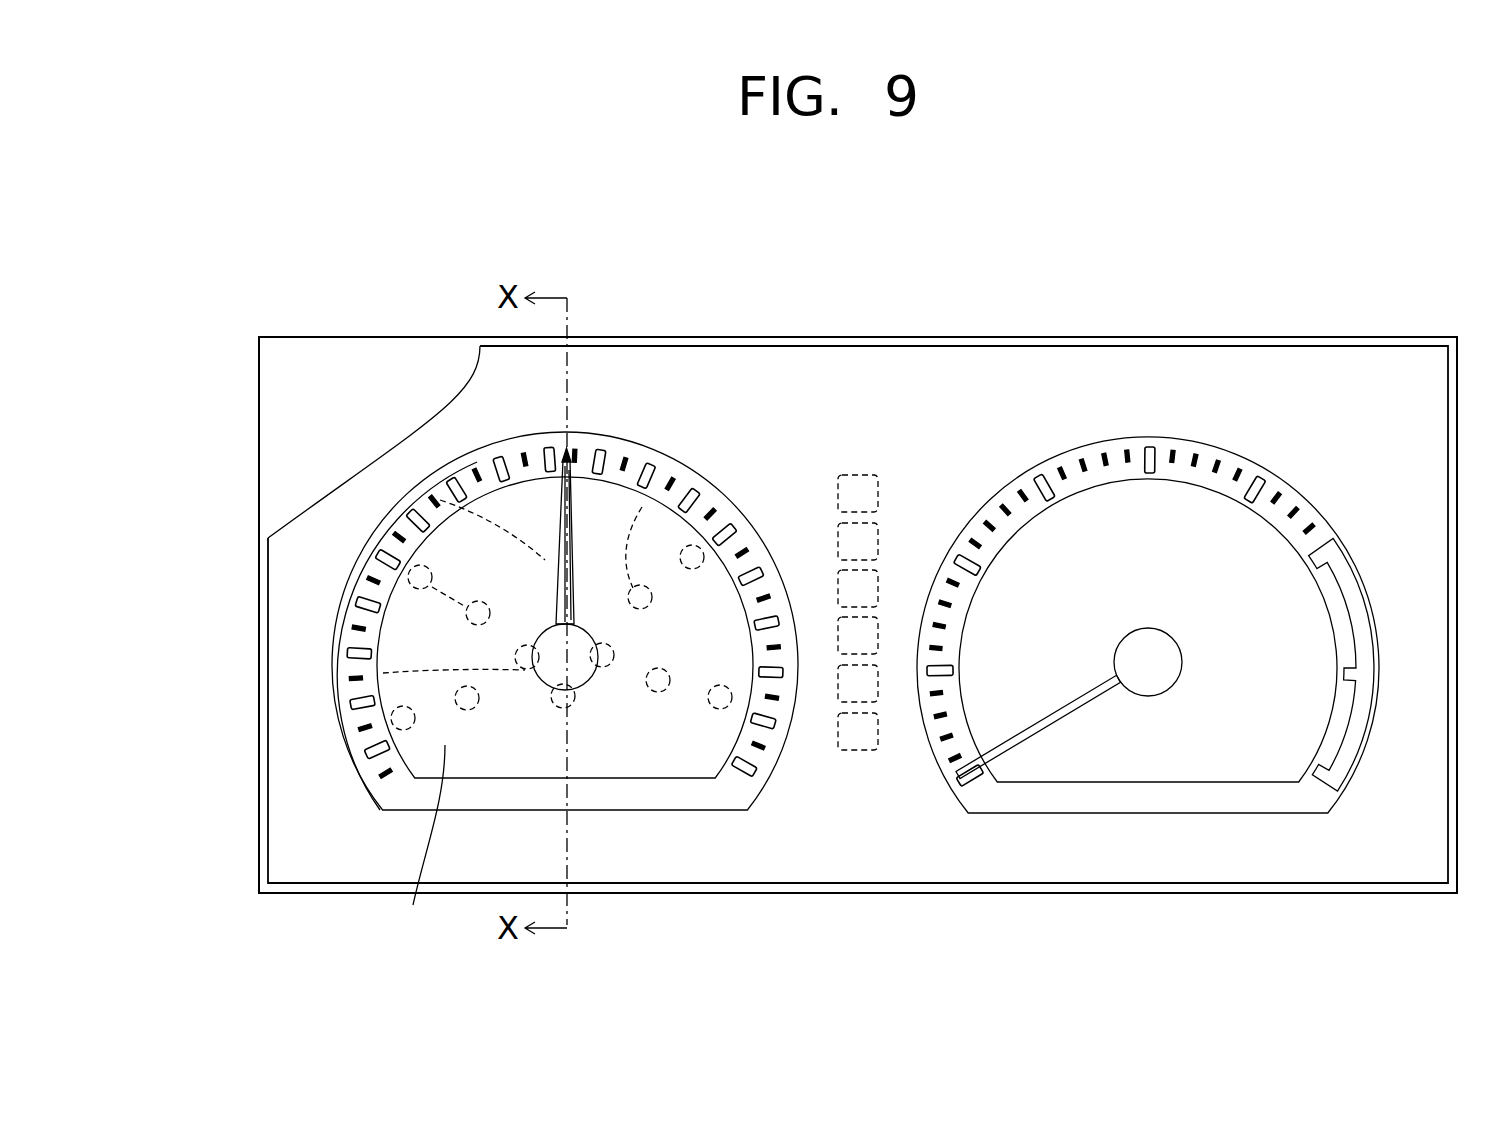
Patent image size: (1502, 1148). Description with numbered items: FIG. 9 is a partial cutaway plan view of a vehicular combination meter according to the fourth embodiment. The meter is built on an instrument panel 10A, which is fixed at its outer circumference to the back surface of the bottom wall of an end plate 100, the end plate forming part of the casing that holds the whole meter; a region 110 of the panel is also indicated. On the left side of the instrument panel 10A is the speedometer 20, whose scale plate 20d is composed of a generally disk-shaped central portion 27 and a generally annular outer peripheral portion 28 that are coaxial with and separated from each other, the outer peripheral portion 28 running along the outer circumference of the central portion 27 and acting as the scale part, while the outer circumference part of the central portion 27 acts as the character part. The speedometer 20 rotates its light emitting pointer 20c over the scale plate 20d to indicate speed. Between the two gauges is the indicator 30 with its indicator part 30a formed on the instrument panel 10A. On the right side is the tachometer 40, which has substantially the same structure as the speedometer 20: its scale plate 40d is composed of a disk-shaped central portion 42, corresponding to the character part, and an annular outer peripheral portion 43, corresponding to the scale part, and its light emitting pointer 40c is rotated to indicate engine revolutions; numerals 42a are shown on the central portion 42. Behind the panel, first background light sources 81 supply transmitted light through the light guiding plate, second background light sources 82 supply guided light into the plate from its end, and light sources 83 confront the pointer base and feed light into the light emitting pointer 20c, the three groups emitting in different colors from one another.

The end plate 100 is at (1140, 338).
The decorative region 110 is at (352, 375).
The instrument panel 10A is at (858, 385).
The speedometer 20 is at (498, 655).
The light emitting pointer 20c is at (555, 600).
The scale plate 20d is at (640, 440).
The central portion 27 is at (418, 846).
The outer peripheral portion 28 is at (477, 460).
The indicator 30 is at (891, 608).
The indicator part 30a is at (855, 755).
The tachometer 40 is at (1153, 606).
The light emitting pointer 40c is at (1078, 720).
The scale plate 40d is at (1032, 462).
The central portion 42 is at (1243, 745).
The tachometer numerals 42a is at (1057, 527).
The outer peripheral portion 43 is at (1225, 460).
The light sources 81 is at (548, 447).
The light sources 82 is at (697, 460).
The light sources 83 is at (612, 648).